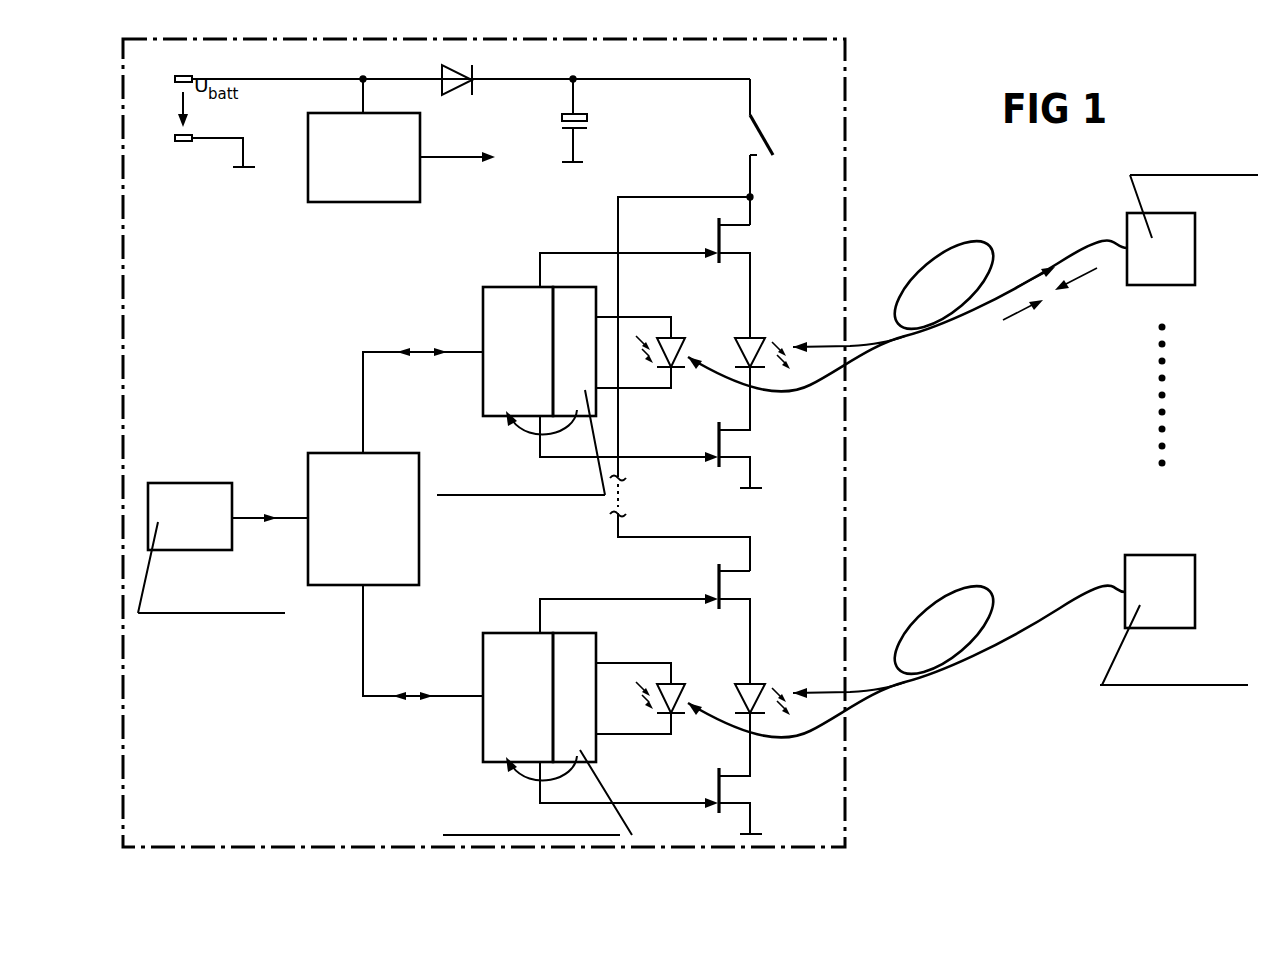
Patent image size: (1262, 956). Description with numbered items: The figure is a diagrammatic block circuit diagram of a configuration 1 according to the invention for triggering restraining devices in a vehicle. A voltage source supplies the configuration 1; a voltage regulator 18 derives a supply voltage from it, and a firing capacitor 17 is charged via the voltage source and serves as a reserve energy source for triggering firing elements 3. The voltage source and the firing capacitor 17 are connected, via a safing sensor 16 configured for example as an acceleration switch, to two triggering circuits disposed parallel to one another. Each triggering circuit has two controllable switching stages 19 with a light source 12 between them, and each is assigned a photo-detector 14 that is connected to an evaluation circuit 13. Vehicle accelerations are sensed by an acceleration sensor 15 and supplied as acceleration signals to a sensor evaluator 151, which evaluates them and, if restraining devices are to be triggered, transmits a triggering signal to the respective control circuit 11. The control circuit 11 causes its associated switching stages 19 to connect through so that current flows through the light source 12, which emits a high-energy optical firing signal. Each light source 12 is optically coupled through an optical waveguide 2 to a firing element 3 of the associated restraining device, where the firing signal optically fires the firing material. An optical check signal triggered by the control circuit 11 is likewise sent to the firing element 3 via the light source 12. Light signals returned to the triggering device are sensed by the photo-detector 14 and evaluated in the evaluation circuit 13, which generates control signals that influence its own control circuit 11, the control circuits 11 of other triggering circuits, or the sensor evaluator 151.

The configuration 1 is at (846, 195).
The optical waveguide 2 is at (920, 352).
The firing element 3 is at (1196, 247).
The control circuit 11 is at (600, 530).
The light source 12 is at (757, 337).
The evaluation circuit 13 is at (585, 364).
The photo-detector 14 is at (676, 337).
The acceleration sensor 15 is at (190, 483).
The safing sensor 16 is at (766, 140).
The firing capacitor 17 is at (588, 118).
The voltage regulator 18 is at (360, 202).
The controllable switching stage 19 is at (770, 444).
The sensor evaluator 151 is at (395, 512).